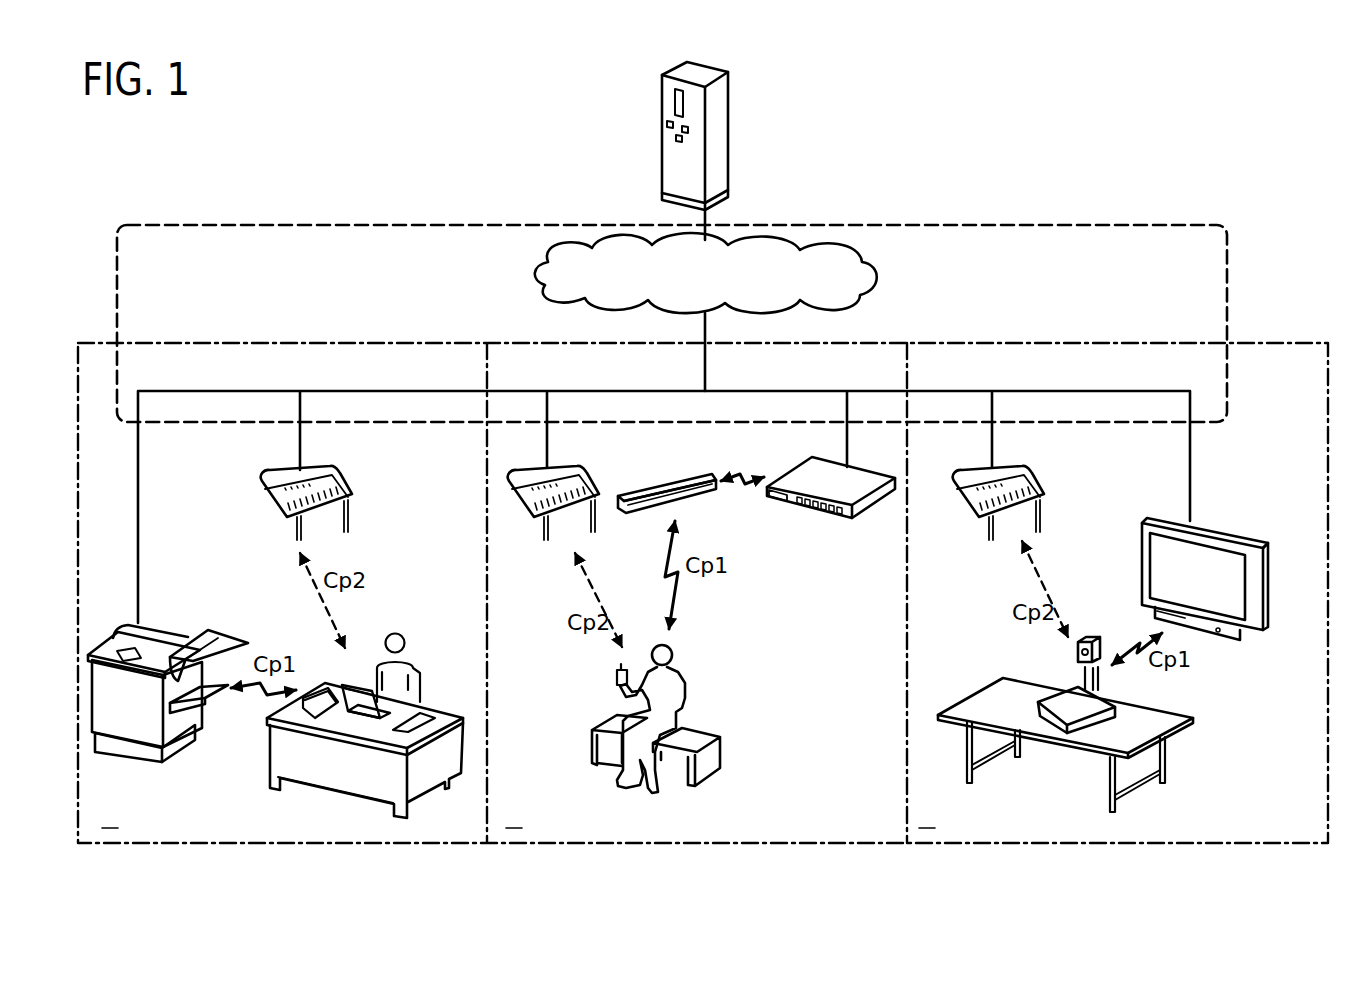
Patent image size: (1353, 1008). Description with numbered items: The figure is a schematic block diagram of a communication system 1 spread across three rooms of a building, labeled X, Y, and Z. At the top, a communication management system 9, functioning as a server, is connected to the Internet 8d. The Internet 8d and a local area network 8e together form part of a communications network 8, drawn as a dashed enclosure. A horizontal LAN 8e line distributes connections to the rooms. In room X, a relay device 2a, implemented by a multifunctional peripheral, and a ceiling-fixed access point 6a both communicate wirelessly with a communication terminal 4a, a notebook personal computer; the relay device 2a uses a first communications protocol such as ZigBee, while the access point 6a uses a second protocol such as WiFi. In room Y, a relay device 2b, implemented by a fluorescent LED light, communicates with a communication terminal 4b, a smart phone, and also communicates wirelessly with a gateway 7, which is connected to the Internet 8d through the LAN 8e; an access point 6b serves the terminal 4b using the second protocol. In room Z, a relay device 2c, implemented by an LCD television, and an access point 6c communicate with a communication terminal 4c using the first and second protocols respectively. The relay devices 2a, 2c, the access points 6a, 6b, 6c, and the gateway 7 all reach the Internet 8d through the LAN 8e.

The communication system 1 is at (401, 156).
The relay device 2a is at (181, 751).
The relay device 2b is at (673, 479).
The relay device 2c is at (1238, 535).
The communication terminal 4a is at (370, 713).
The communication terminal 4b is at (615, 676).
The communication terminal 4c is at (1047, 725).
The access point 6a is at (273, 478).
The access point 6b is at (520, 477).
The access point 6c is at (965, 477).
The gateway 7 is at (877, 503).
The communications network 8 is at (1191, 222).
The Internet 8d is at (848, 295).
The local area network (LAN) 8e is at (664, 492).
The communication management system 9 is at (730, 120).